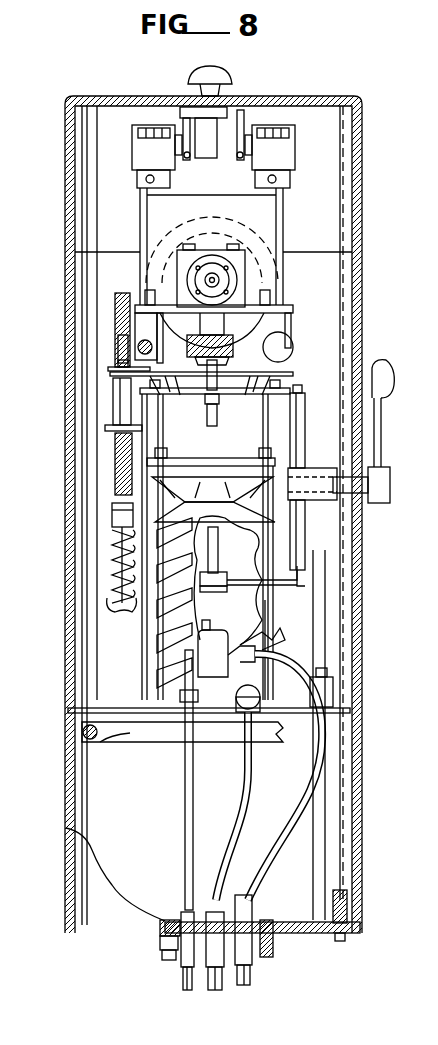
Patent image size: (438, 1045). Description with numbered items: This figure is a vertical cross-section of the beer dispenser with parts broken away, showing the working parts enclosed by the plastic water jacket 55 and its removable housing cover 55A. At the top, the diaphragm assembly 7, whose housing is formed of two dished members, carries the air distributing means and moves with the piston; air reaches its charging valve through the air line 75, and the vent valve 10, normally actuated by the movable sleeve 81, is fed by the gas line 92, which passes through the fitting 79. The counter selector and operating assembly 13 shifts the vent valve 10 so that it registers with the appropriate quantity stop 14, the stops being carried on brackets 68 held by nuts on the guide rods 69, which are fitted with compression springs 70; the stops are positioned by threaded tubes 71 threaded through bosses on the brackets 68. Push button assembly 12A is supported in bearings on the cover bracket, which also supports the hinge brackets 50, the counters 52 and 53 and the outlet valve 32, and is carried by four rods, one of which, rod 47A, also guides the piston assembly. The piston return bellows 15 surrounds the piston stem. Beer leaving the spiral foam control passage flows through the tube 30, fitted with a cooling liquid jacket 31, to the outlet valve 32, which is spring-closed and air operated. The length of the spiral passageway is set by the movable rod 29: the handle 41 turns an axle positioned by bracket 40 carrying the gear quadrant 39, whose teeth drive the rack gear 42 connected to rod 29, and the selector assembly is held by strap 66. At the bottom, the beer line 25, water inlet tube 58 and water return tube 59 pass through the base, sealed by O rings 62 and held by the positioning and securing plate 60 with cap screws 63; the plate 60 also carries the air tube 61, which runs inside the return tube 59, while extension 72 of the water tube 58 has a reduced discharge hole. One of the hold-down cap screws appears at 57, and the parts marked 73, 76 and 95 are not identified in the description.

The diaphragm assembly 7 is at (207, 410).
The vent valve 10 is at (130, 392).
The push button assembly 12A is at (290, 347).
The counter selector and operating assembly 13 is at (205, 100).
The quantity stop 14 is at (118, 510).
The piston return bellows 15 is at (203, 499).
The beer tube 25 is at (215, 982).
The movable rod 29 is at (216, 575).
The tube 30 is at (255, 652).
The cooling liquid jacket 31 is at (190, 660).
The outlet valve 32 is at (225, 283).
The gear quadrant 39 is at (300, 535).
The bracket 40 is at (322, 650).
The handle 41 is at (381, 418).
The rack gear 42 is at (300, 582).
The rod 47A is at (270, 605).
The hinge brackets 50 is at (150, 328).
The counter 52 is at (140, 150).
The counter 53 is at (285, 150).
The water jacket 55 is at (350, 710).
The housing cover 55A is at (362, 186).
The bolt 57 is at (345, 940).
The water inlet tube 58 is at (252, 980).
The water return tube 59 is at (185, 975).
The positioning and securing plate 60 is at (165, 950).
The air tube 61 is at (165, 935).
The O rings 62 is at (258, 945).
The cap screws 63 is at (275, 950).
The strap 66 is at (100, 740).
The brackets 68 is at (115, 613).
The guide rods 69 is at (118, 589).
The compression springs 70 is at (118, 560).
The threaded tubes 71 is at (118, 305).
The extension of water tube 72 is at (318, 760).
The bottom plate 73 is at (298, 933).
The air line 75 is at (225, 431).
The plate 76 is at (293, 374).
The fitting 79 is at (115, 369).
The movable sleeve 81 is at (122, 400).
The line 92 is at (118, 346).
The solenoid 95 is at (200, 665).